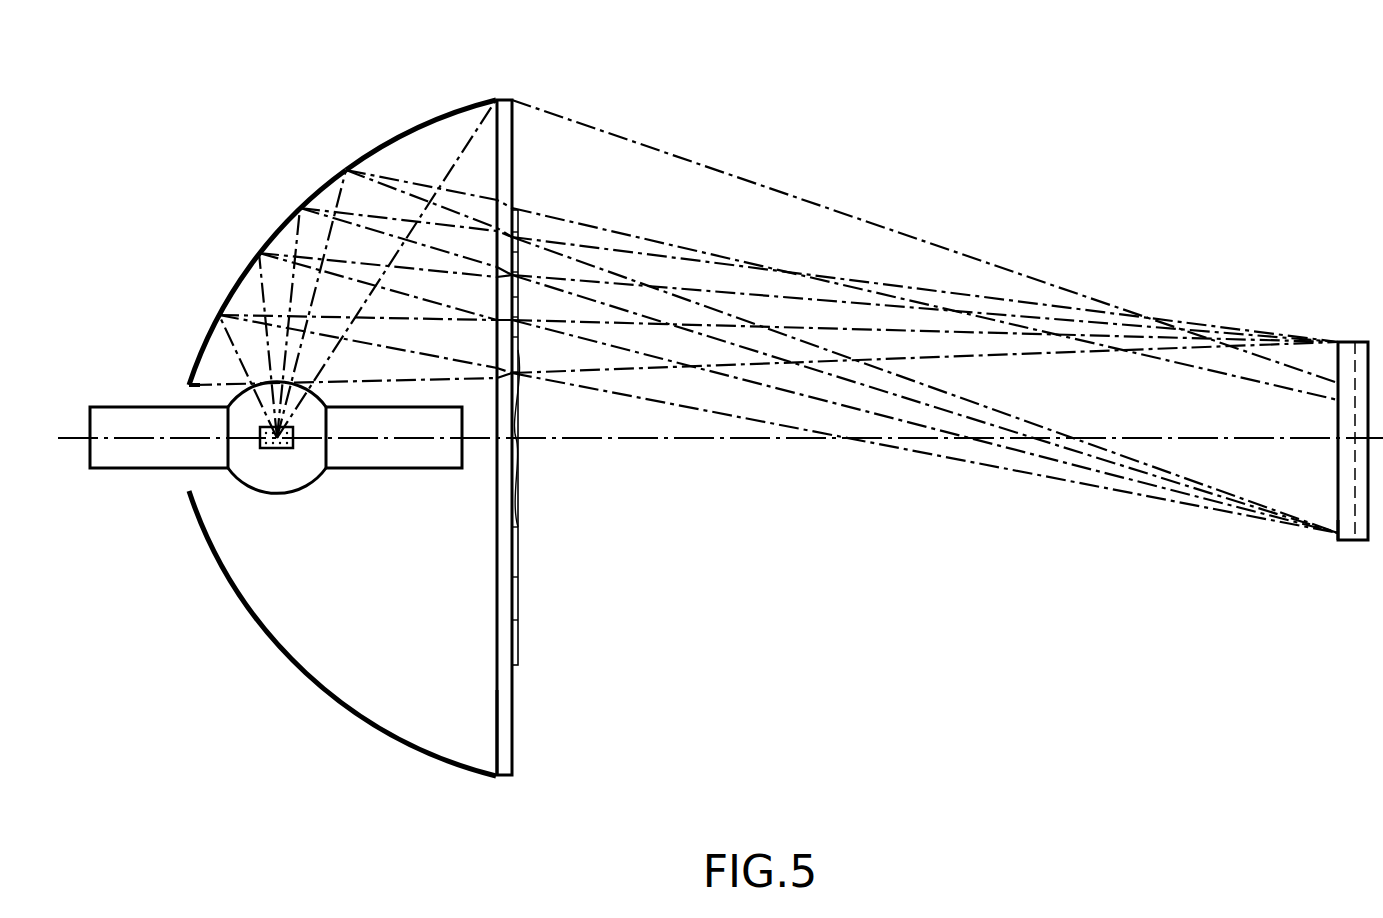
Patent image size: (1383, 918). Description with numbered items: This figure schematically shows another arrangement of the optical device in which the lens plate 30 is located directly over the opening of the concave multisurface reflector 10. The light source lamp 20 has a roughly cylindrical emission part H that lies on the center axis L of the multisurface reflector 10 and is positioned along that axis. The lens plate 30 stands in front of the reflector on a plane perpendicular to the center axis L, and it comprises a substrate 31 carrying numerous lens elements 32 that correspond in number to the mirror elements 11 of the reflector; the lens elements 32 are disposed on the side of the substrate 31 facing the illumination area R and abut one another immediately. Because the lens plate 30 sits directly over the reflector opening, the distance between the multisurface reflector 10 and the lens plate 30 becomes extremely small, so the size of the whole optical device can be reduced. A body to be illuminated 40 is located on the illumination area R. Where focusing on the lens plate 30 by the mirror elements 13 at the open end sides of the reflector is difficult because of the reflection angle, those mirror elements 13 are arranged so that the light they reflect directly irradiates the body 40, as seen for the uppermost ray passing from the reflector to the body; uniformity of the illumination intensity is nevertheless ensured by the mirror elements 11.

The multisurface reflector 10 is at (249, 219).
The mirror elements 11 is at (321, 414).
The mirror elements at the open end sides 13 is at (403, 134).
The light source lamp 20 is at (392, 460).
The emission part H is at (280, 452).
The center axis L is at (70, 440).
The lens plate 30 is at (508, 778).
The substrate 31 is at (496, 728).
The lens elements 32 is at (520, 490).
The body to be illuminated 40 is at (1355, 342).
The illumination area R is at (1353, 504).